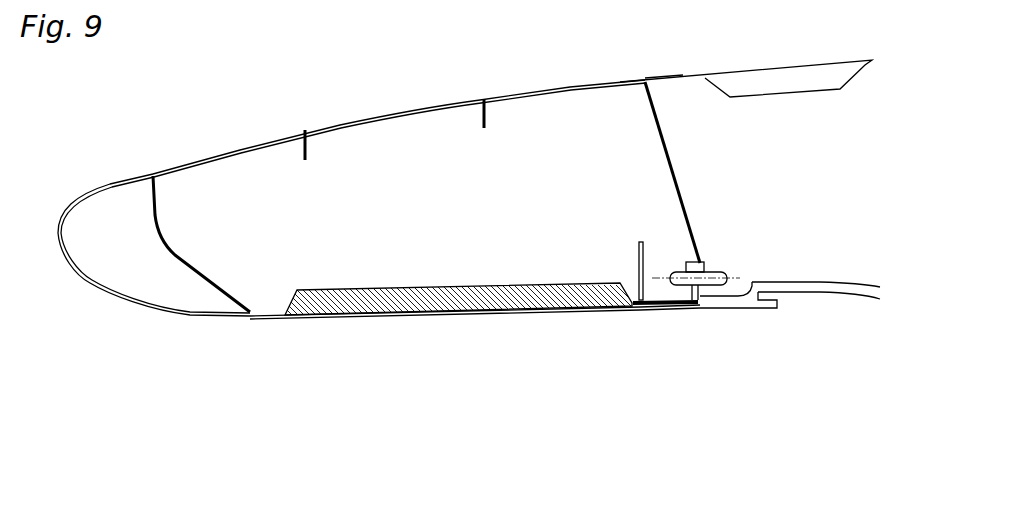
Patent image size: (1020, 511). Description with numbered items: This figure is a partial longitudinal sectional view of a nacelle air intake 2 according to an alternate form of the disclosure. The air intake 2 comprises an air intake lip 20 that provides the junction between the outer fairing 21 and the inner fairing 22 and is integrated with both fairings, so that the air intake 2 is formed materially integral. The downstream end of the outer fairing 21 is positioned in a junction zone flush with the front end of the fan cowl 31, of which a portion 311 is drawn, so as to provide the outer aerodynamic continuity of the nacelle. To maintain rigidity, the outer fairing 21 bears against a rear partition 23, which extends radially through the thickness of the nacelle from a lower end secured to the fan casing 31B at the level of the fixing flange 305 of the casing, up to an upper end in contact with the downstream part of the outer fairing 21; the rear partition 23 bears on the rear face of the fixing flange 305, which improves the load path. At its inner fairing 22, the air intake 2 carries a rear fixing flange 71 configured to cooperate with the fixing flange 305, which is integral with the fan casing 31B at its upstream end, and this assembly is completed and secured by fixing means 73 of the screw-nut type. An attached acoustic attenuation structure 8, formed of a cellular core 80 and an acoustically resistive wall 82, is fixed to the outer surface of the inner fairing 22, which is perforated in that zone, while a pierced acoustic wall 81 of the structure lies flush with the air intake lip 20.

The air intake 2 is at (157, 100).
The acoustic attenuation structure 8 is at (308, 332).
The air intake lip 20 is at (105, 183).
The outer fairing 21 is at (395, 108).
The inner fairing 22 is at (370, 288).
The rear partition 23 is at (672, 148).
The fan cowl 31 is at (876, 52).
The panel upper portion 311 is at (773, 72).
The fan casing 31B is at (830, 282).
The rear fixing flange 71 is at (634, 256).
The fixing means 73 is at (700, 270).
The cellular core 80 is at (530, 310).
The pierced acoustic wall 81 is at (365, 320).
The acoustically resistive wall 82 is at (462, 283).
The fixing flange of the casing 305 is at (700, 310).